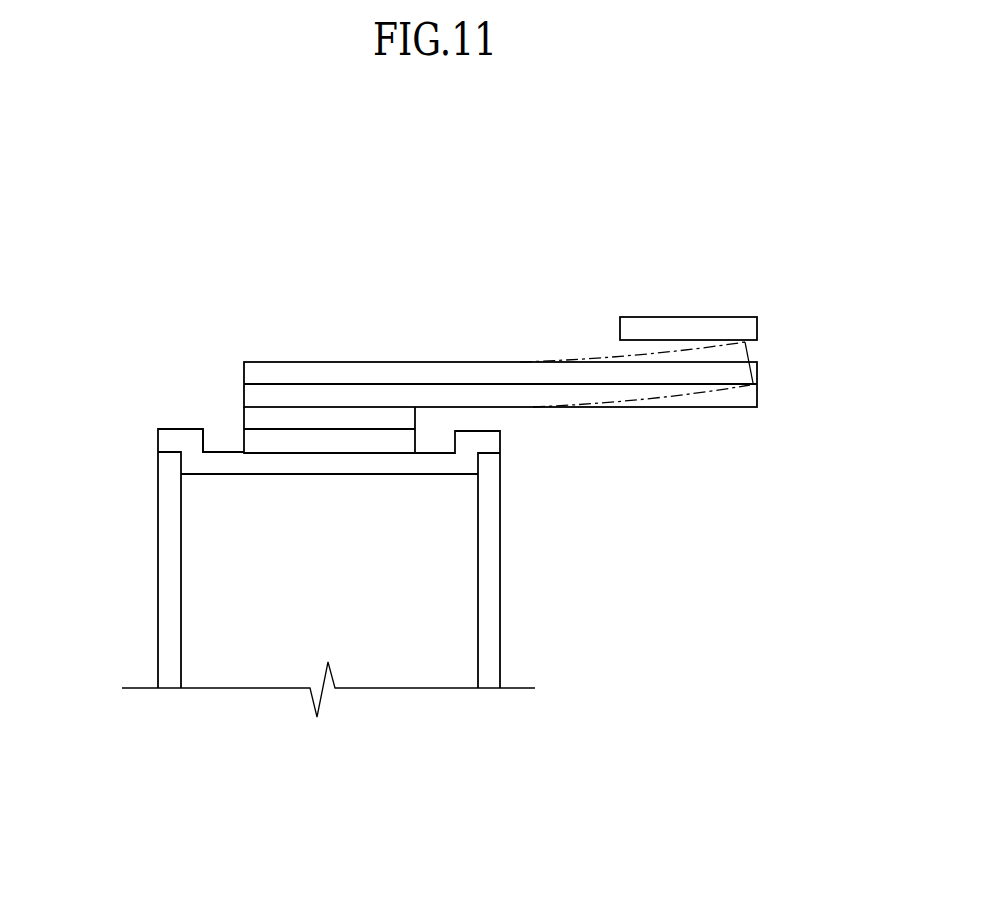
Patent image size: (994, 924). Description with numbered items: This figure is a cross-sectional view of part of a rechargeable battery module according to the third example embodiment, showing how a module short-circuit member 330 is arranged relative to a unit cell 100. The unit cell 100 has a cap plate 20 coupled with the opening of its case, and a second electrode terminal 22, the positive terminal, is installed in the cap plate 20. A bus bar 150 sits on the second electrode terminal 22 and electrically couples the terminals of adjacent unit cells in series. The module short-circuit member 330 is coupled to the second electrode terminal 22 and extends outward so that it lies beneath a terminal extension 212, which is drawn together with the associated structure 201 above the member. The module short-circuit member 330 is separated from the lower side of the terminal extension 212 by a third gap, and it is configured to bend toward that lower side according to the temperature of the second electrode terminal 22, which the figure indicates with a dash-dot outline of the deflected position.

The unit cell 100 is at (158, 538).
The cap plate 20 is at (427, 467).
The second electrode terminal 22 is at (252, 440).
The bus bar 150 is at (325, 420).
The module short-circuit member 330 is at (707, 397).
The terminal extension 212 is at (676, 328).
The support structure 201 is at (688, 298).